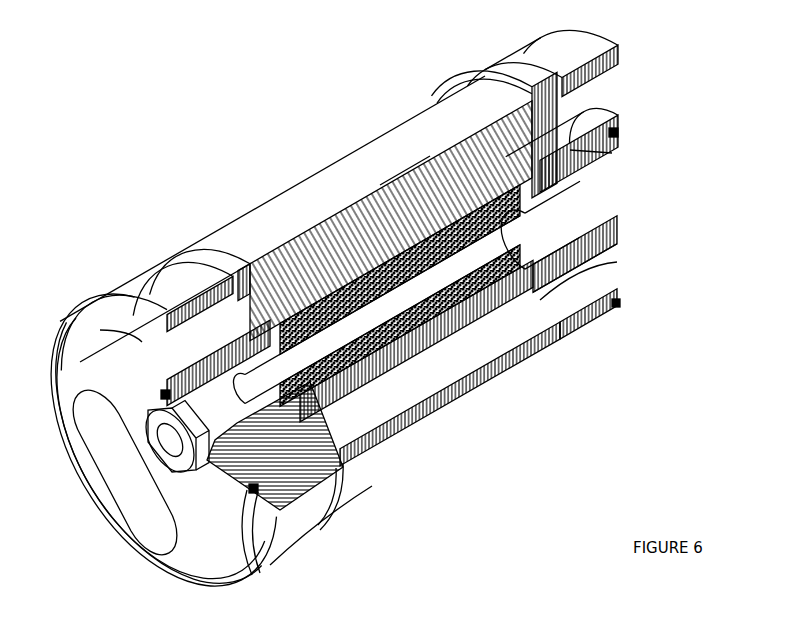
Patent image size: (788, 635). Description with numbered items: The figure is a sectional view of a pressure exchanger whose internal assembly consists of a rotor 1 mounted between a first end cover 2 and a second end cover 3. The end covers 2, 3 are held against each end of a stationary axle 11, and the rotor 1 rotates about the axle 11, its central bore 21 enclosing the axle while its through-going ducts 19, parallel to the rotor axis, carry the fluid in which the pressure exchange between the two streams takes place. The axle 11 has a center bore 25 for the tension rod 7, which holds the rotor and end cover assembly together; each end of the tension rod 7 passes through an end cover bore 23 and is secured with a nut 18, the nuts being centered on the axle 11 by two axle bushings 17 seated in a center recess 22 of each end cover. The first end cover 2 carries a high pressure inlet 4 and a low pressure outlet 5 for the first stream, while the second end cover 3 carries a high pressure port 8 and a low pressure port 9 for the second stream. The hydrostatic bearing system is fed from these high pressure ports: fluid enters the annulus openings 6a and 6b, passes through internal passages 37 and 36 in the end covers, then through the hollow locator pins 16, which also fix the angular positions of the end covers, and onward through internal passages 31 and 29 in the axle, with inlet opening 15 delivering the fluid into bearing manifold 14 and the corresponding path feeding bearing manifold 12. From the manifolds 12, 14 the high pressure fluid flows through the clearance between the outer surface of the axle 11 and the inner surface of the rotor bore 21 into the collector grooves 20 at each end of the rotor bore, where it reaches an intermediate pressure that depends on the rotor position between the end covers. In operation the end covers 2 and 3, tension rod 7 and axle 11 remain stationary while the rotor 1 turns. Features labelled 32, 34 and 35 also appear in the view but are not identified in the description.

The rotor 1 is at (278, 190).
The first end cover 2 is at (572, 55).
The second end cover 3 is at (120, 288).
The high pressure inlet 4 is at (557, 110).
The low pressure outlet 5 is at (563, 300).
The annulus opening 6a is at (163, 393).
The annulus opening 6b is at (618, 130).
The tension rod 7 is at (343, 343).
The high pressure port 8 is at (142, 342).
The low pressure port 9 is at (117, 473).
The axle 11 is at (367, 185).
The bearing manifold 12 is at (263, 283).
The bearing manifold 14 is at (502, 295).
The inlet opening 15 is at (402, 187).
The locator bushing 16 is at (537, 183).
The axle bushing 17 is at (548, 238).
The nut 18 is at (167, 530).
The through-going duct 19 is at (447, 357).
The groove 20 is at (235, 270).
The central bore 21 is at (322, 185).
The center recess 22 is at (147, 430).
The end cover bore 23 is at (303, 492).
The center bore 25 is at (403, 360).
The internal passage 29 is at (432, 165).
The internal passage 31 is at (262, 262).
The flange rim 32 is at (280, 568).
The ring surface 34 is at (170, 255).
The end ring 35 is at (548, 82).
The internal passage 36 is at (612, 150).
The internal passage 37 is at (167, 313).